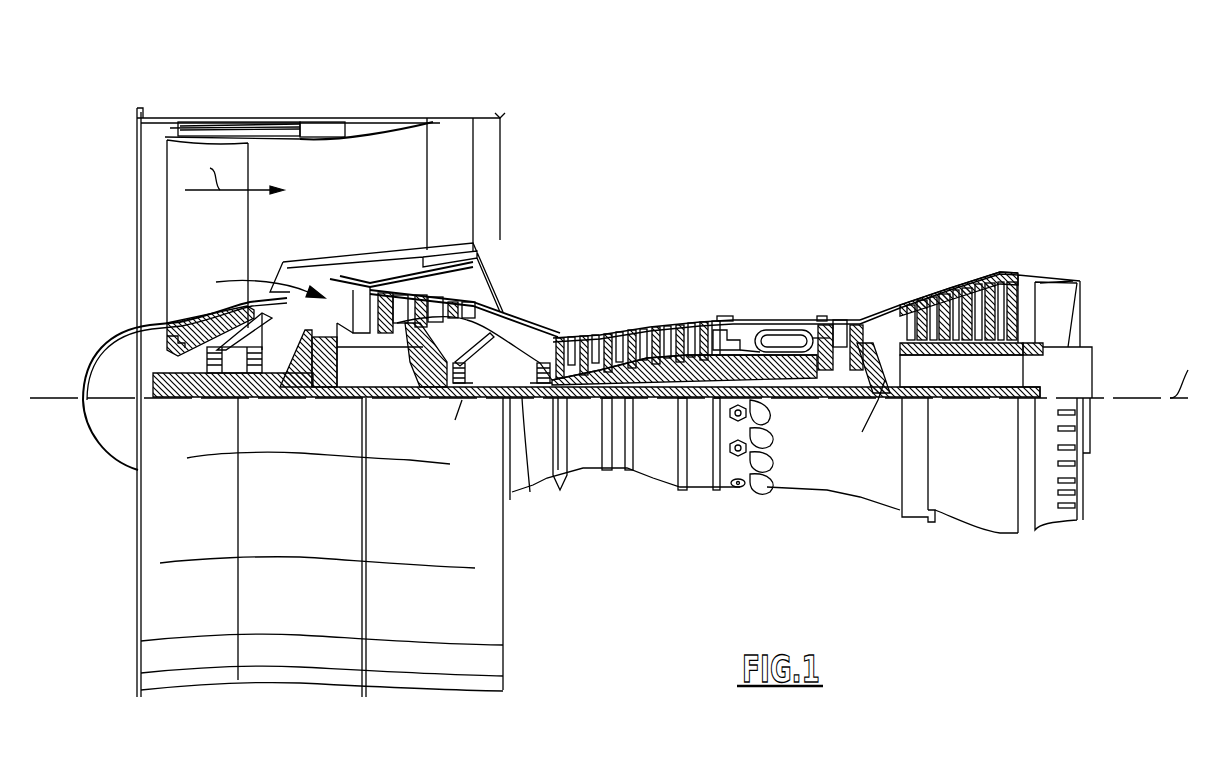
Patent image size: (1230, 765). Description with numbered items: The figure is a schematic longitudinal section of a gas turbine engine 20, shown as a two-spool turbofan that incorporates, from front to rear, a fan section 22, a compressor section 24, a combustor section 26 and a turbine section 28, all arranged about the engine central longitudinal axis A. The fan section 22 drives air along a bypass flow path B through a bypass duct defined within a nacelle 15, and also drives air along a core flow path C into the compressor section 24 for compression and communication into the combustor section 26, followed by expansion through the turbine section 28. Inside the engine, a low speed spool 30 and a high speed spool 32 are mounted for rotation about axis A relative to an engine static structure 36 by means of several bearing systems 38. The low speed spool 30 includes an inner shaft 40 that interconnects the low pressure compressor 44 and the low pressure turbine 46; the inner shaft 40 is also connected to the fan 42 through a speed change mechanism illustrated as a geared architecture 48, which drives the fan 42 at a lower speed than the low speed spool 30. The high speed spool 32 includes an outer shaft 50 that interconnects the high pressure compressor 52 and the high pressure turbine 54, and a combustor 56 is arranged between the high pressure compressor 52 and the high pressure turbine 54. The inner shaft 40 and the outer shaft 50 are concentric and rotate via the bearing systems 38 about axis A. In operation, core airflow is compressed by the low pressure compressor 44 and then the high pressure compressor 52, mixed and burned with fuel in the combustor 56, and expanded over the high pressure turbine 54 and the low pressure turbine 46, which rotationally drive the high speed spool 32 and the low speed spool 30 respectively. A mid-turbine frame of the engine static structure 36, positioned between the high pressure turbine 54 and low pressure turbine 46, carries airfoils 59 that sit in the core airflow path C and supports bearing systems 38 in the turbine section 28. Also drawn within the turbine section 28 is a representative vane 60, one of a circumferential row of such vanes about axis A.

The nacelle 15 is at (318, 122).
The gas turbine engine 20 is at (782, 167).
The fan section 22 is at (246, 104).
The compressor section 24 is at (554, 304).
The combustor section 26 is at (778, 296).
The turbine section 28 is at (923, 254).
The low speed spool 30 is at (658, 404).
The high speed spool 32 is at (700, 360).
The engine static structure 36 is at (699, 502).
The bearing systems 38 is at (448, 422).
The inner shaft 40 is at (530, 494).
The fan 42 is at (224, 246).
The low pressure compressor 44 is at (427, 303).
The low pressure turbine 46 is at (965, 280).
The geared architecture 48 is at (320, 400).
The outer shaft 50 is at (783, 400).
The high pressure compressor 52 is at (636, 336).
The high pressure turbine 54 is at (840, 320).
The combustor 56 is at (774, 343).
The airfoils 59 is at (903, 357).
The vane 60 is at (884, 304).